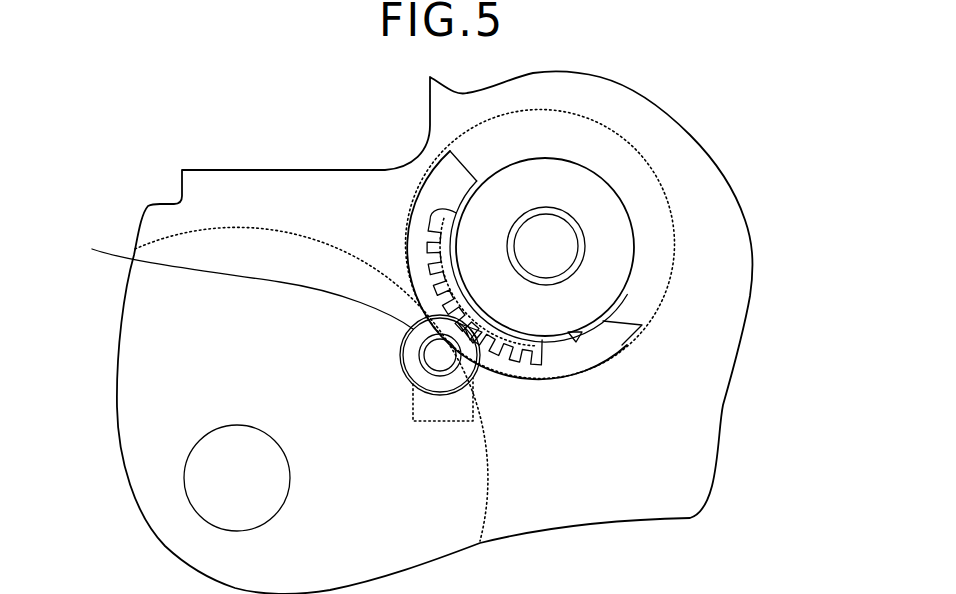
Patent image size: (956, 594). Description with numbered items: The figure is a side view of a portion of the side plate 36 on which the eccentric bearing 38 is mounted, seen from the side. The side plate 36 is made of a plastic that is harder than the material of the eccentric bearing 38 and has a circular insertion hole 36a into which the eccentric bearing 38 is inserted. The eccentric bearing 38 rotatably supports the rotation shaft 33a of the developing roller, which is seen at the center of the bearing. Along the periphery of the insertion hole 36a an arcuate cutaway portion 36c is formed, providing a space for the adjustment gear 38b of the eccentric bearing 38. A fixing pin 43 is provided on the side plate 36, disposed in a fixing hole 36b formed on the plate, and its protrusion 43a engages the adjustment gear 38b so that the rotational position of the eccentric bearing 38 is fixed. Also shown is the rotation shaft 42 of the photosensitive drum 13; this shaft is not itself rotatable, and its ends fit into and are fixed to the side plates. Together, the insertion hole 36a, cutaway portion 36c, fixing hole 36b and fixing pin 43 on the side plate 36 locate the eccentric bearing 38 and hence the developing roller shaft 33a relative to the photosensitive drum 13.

The photosensitive drum 13 is at (226, 230).
The side plate 36 is at (253, 170).
The insertion hole 36a is at (489, 165).
The fixing hole 36b is at (229, 281).
The cutaway portion 36c is at (417, 198).
The rotation shaft of the developing roller 33a is at (555, 240).
The eccentric bearing 38 is at (622, 345).
The adjustment gear 38b is at (537, 358).
The rotation shaft of the photosensitive drum 42 is at (190, 452).
The fixing pin 43 is at (446, 378).
The protrusion 43a is at (462, 352).